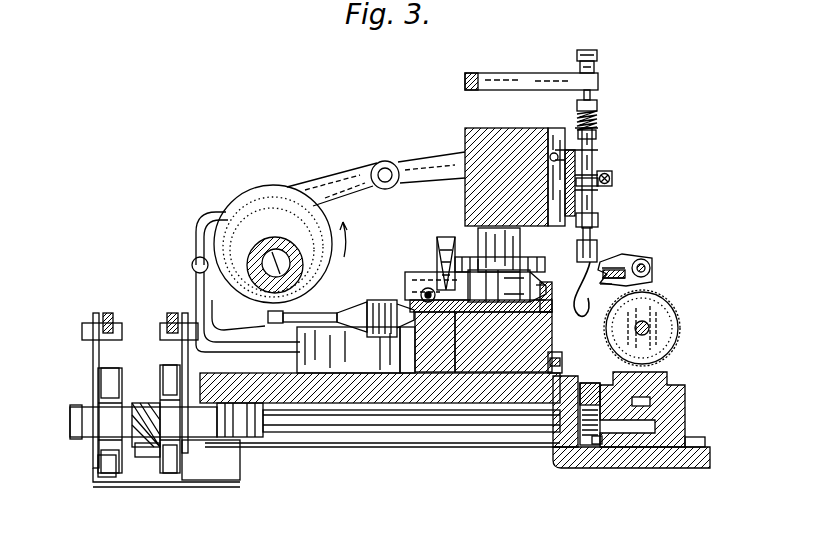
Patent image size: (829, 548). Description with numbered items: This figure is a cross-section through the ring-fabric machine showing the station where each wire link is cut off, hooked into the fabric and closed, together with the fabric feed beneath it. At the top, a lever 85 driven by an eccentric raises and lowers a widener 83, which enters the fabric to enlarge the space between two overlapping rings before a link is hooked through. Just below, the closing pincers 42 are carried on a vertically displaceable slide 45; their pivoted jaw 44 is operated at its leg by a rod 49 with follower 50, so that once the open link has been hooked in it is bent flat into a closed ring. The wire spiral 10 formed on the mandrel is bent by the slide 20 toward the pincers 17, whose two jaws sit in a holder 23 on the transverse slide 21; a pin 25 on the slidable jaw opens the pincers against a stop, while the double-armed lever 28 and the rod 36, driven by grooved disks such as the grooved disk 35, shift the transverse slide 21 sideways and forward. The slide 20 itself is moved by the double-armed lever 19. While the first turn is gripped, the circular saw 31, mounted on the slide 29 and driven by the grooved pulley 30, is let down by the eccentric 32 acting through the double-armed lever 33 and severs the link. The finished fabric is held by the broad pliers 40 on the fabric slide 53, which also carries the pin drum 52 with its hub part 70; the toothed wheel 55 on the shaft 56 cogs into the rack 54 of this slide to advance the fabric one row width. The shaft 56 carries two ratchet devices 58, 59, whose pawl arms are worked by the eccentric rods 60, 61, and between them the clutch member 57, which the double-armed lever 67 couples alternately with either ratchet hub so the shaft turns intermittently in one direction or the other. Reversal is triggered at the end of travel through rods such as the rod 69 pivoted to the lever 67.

The lever 85 is at (600, 75).
The widener 83 is at (598, 112).
The pincer jaw 44 is at (594, 148).
The slide 45 is at (578, 172).
The rod 49 is at (612, 179).
The follower 50 is at (600, 186).
The closing pincers 42 is at (598, 222).
The grooved pulley 30 is at (440, 246).
The slide 29 is at (482, 250).
The circular saw 31 is at (537, 250).
The pin 25 is at (447, 292).
The holder 23 is at (432, 290).
The double-armed lever 19 is at (435, 342).
The pincers 17 is at (503, 342).
The slide 20 is at (546, 312).
The wire spiral 10 is at (541, 284).
The transverse slide 21 is at (561, 363).
The slide 53 is at (668, 388).
The rack 54 is at (589, 386).
The toothed wheel 55 is at (596, 446).
The pin drum 52 is at (661, 312).
The ratchet hub 70 is at (651, 328).
The pliers 40 is at (605, 288).
The eccentric 32 is at (252, 210).
The double-armed lever 33 is at (368, 190).
The grooved disk 35 is at (197, 245).
The rod 36 is at (258, 341).
The double-armed lever 28 is at (362, 303).
The shaft 56 is at (452, 433).
The rod 69 is at (346, 448).
The eccentric rod 60 is at (110, 313).
The eccentric rod 61 is at (173, 313).
The ratchet device 58 is at (104, 398).
The clutch member 57 is at (152, 403).
The ratchet device 59 is at (176, 382).
The double-armed lever 67 is at (150, 450).